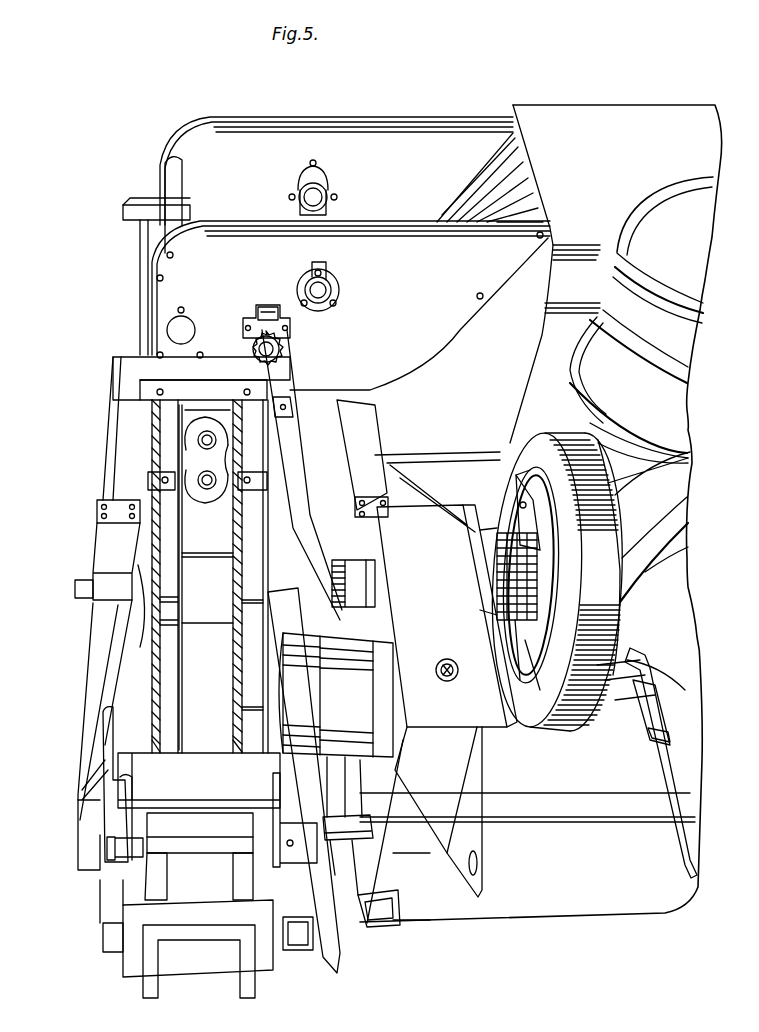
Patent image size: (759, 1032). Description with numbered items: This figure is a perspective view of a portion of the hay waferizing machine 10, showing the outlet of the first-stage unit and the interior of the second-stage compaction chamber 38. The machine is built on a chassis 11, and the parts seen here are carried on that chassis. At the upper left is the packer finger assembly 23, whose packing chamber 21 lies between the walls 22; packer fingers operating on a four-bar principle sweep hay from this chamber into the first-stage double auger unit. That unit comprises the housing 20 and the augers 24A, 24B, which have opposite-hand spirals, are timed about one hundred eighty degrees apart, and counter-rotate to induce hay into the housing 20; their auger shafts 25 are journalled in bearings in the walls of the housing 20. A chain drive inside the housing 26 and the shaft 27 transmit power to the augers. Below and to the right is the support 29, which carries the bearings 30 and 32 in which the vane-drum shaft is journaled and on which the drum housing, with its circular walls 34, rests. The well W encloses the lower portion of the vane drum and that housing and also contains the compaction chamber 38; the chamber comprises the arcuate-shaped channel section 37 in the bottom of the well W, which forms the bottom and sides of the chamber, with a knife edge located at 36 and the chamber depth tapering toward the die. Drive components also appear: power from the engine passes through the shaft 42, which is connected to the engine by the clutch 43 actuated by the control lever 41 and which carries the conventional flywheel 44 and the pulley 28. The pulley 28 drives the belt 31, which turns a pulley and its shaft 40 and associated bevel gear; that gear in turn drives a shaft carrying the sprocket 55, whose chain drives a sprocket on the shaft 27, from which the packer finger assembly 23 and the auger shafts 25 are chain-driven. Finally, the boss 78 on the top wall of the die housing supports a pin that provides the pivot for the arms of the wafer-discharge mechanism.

The hay waferizing machine 10 is at (628, 92).
The chassis 11 is at (100, 912).
The housing 20 is at (175, 415).
The packing chamber 21 is at (373, 128).
The walls 22 is at (228, 128).
The packer finger assembly 23 is at (165, 173).
The auger 24A is at (200, 432).
The auger 24B is at (225, 480).
The auger shafts 25 is at (205, 478).
The housing 26 is at (242, 310).
The shaft 27 is at (285, 345).
The pulley 28 is at (262, 325).
The support 29 is at (305, 478).
The bearing 30 is at (100, 553).
The belt 31 is at (372, 463).
The bearing 32 is at (380, 495).
The circular walls 34 is at (268, 568).
The knife edge 36 is at (163, 735).
The arcuate-shaped channel section 37 is at (182, 680).
The compaction chamber 38 is at (215, 606).
The shaft 40 is at (490, 740).
The control lever 41 is at (360, 570).
The shaft 42 is at (370, 612).
The clutch 43 is at (668, 770).
The flywheel 44 is at (612, 612).
The sprocket 55 is at (335, 633).
The boss 78 is at (160, 833).
The well W is at (130, 648).